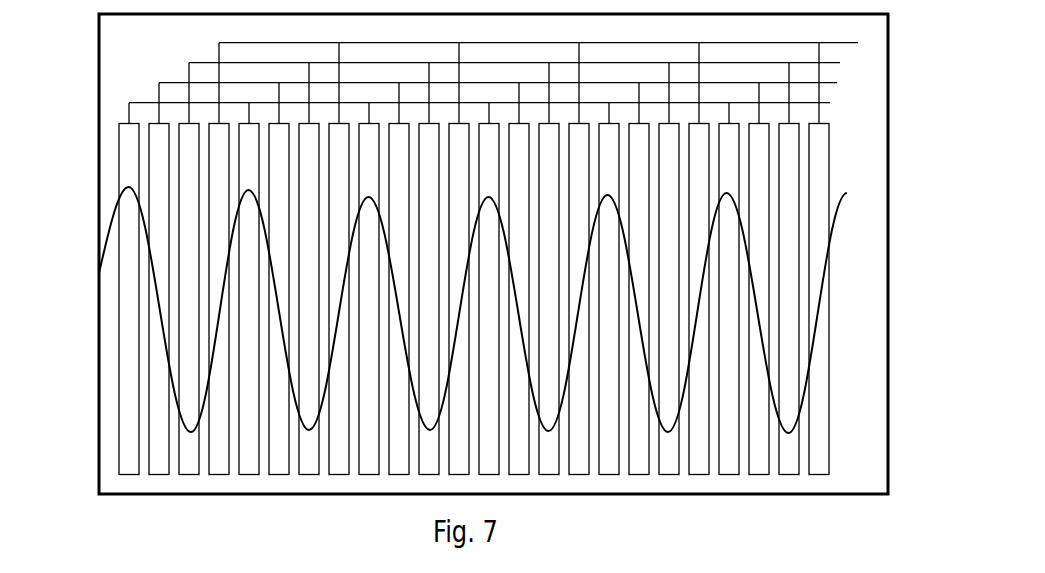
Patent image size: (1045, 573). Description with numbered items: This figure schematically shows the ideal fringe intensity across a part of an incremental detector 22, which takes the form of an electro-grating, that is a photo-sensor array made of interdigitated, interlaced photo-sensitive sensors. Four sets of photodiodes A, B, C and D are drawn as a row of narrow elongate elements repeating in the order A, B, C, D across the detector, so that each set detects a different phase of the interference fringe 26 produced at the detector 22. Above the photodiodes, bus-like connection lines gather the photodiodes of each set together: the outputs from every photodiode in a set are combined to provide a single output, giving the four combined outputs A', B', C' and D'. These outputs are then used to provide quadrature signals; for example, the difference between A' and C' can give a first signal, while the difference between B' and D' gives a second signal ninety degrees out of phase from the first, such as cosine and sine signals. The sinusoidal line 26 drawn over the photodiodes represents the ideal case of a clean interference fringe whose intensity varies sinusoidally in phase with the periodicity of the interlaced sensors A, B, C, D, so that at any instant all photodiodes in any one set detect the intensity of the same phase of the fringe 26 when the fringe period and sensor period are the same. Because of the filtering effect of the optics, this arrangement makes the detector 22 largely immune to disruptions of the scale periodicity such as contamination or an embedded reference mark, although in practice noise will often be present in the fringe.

The incremental detector 22 is at (459, 254).
The interference fringe 26 is at (836, 237).
The set of photodiodes A is at (429, 299).
The set of photodiodes B is at (459, 299).
The set of photodiodes C is at (489, 299).
The set of photodiodes D is at (519, 299).
The combined output A' is at (490, 108).
The combined output B' is at (508, 98).
The combined output C' is at (525, 88).
The combined output D' is at (554, 78).